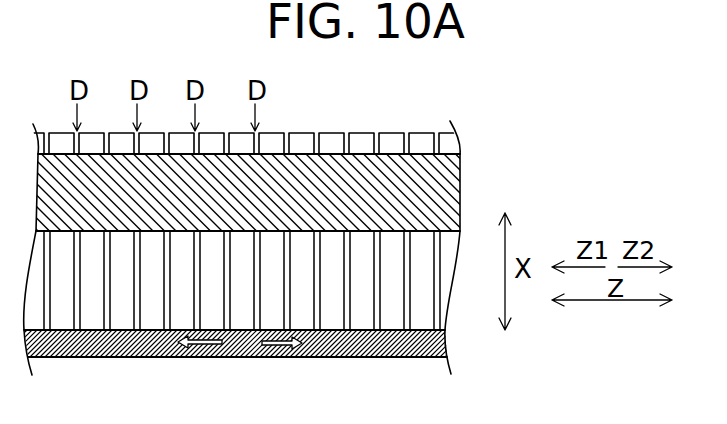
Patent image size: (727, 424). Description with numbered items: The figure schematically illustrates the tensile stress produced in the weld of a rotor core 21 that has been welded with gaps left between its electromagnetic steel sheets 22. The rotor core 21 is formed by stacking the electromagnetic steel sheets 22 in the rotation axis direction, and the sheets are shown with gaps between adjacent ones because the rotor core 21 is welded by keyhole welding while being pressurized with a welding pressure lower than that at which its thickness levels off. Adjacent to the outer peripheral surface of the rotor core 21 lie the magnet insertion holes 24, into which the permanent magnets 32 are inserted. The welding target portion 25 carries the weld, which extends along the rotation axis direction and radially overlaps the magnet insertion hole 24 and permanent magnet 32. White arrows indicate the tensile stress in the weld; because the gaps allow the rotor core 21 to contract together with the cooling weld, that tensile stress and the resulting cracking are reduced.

The rotor core 21 is at (413, 122).
The electromagnetic steel sheets 22 is at (62, 141).
The magnet insertion holes 24 is at (359, 167).
The permanent magnets 32 is at (301, 173).
The welding target portions 25 is at (378, 357).